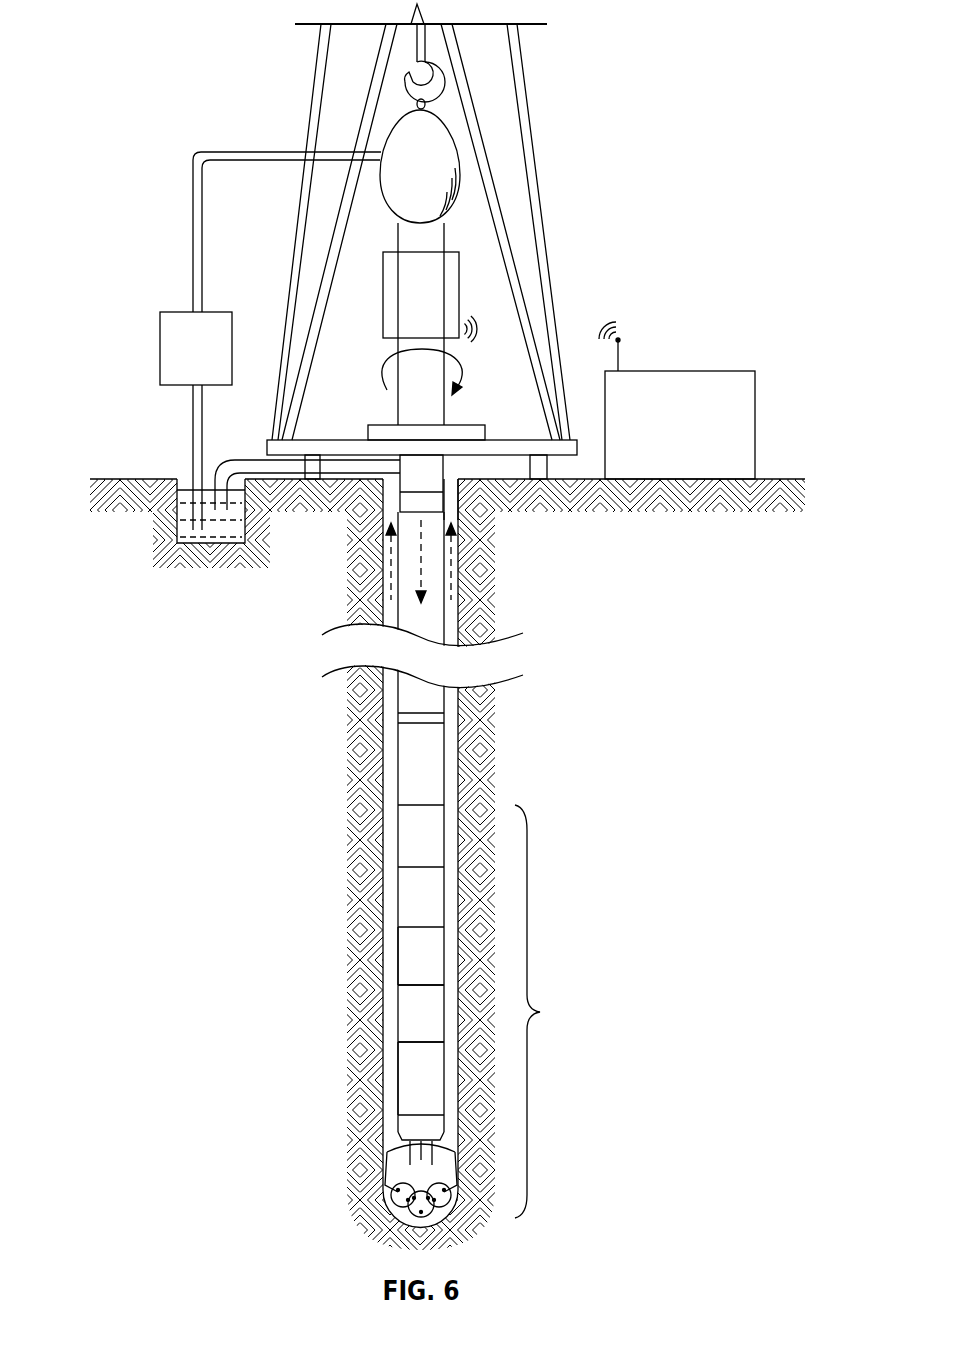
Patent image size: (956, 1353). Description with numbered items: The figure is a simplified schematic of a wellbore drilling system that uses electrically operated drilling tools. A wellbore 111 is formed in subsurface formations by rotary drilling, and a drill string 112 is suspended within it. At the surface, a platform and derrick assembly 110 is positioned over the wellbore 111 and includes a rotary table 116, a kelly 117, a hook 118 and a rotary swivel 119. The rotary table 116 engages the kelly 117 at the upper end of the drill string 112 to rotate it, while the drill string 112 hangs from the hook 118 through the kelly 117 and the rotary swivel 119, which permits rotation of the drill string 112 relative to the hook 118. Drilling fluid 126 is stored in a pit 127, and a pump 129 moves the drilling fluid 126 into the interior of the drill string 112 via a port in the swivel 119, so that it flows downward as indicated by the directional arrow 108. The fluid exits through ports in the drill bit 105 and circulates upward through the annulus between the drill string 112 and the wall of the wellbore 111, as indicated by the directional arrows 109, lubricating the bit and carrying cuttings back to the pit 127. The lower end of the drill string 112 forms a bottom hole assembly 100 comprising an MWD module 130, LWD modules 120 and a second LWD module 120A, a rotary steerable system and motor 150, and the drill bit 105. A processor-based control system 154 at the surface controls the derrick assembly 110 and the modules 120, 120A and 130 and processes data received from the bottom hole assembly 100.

The bottom hole assembly 100 is at (550, 1011).
The drill bit 105 is at (398, 1162).
The directional arrow 108 is at (420, 562).
The directional arrows 109 is at (392, 543).
The platform and derrick assembly 110 is at (558, 108).
The wellbore 111 is at (453, 485).
The drill string 112 is at (421, 472).
The rotary table 116 is at (470, 423).
The kelly 117 is at (405, 410).
The hook 118 is at (412, 50).
The rotary swivel 119 is at (412, 168).
The LWD module 120 is at (410, 892).
The second LWD module 120A is at (410, 1020).
The drilling fluid 126 is at (210, 536).
The pit 127 is at (176, 474).
The pump 129 is at (160, 348).
The MWD module 130 is at (397, 957).
The rotary steerable system and motor 150 is at (412, 1085).
The control system 154 is at (715, 371).